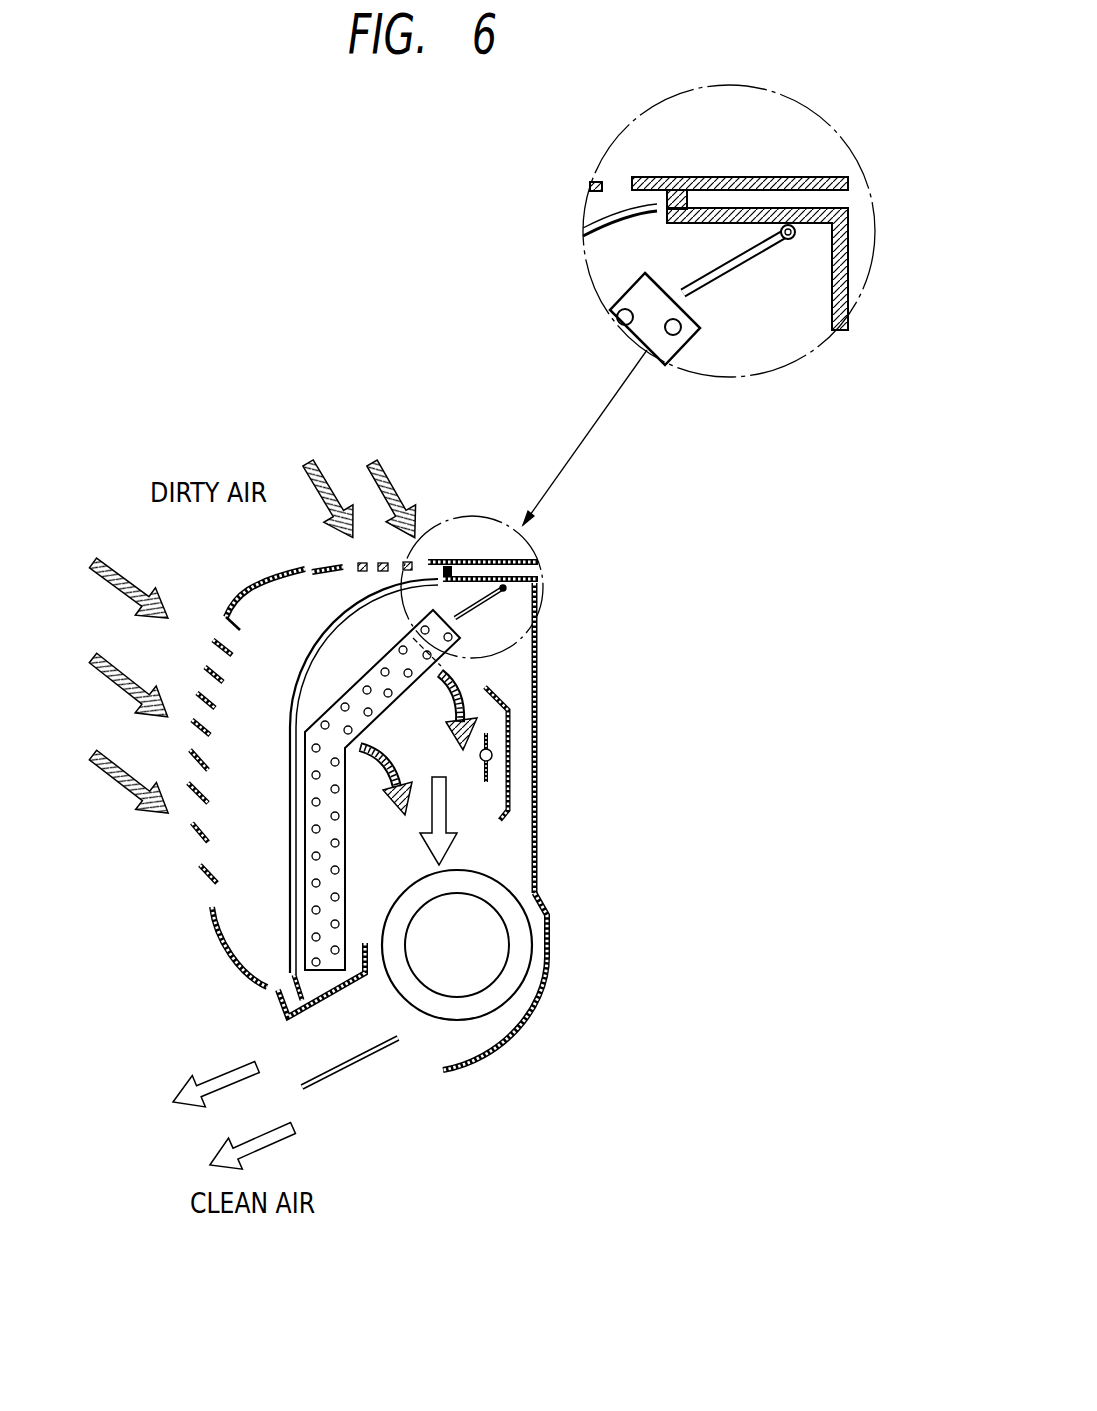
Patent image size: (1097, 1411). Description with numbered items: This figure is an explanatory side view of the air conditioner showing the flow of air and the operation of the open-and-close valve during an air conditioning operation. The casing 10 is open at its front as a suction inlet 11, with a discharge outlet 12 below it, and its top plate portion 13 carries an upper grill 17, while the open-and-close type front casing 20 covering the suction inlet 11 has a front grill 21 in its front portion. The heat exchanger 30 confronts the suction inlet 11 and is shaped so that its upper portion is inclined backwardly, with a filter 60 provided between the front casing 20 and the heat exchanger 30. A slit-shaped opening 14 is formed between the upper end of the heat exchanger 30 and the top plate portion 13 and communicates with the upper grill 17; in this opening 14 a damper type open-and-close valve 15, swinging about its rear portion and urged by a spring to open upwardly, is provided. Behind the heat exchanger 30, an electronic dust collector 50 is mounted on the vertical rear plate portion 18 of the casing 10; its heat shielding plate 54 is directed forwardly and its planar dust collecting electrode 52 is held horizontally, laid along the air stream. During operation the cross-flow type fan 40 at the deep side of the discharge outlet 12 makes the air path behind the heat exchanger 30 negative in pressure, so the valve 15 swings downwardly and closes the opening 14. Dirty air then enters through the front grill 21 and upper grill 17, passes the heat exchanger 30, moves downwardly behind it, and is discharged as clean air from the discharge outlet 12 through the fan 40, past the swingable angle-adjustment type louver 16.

The casing 10 is at (664, 681).
The suction inlet 11 is at (277, 742).
The discharge outlet 12 is at (415, 1052).
The top plate portion 13 is at (507, 555).
The slit-shaped opening 14 is at (453, 597).
The damper type open-and-close valve 15 is at (483, 617).
The angle-adjustment type louver 16 is at (333, 1073).
The upper grill 17 is at (373, 568).
The vertical rear plate portion 18 is at (540, 848).
The front casing 20 is at (227, 950).
The front grill 21 is at (200, 848).
The heat exchanger 30 is at (313, 865).
The cross-flow type fan 40 is at (527, 957).
The electronic dust collector 50 is at (552, 755).
The dust collecting electrode 52 is at (490, 737).
The heat shielding plate 54 is at (512, 766).
The filter 60 is at (313, 653).